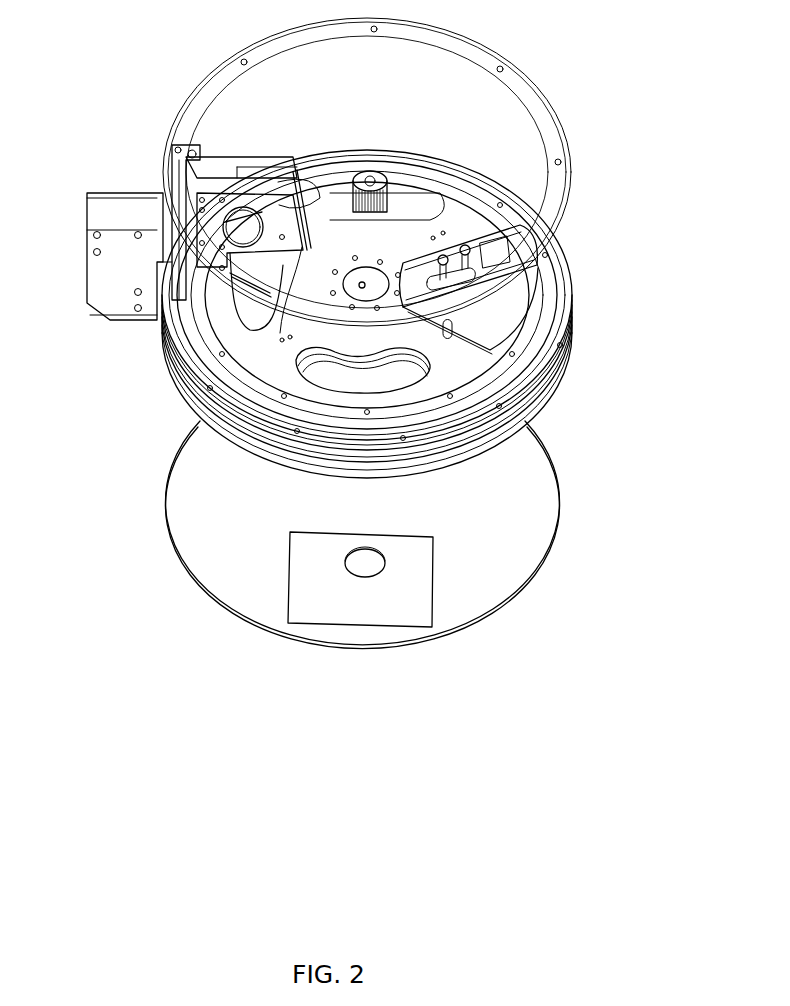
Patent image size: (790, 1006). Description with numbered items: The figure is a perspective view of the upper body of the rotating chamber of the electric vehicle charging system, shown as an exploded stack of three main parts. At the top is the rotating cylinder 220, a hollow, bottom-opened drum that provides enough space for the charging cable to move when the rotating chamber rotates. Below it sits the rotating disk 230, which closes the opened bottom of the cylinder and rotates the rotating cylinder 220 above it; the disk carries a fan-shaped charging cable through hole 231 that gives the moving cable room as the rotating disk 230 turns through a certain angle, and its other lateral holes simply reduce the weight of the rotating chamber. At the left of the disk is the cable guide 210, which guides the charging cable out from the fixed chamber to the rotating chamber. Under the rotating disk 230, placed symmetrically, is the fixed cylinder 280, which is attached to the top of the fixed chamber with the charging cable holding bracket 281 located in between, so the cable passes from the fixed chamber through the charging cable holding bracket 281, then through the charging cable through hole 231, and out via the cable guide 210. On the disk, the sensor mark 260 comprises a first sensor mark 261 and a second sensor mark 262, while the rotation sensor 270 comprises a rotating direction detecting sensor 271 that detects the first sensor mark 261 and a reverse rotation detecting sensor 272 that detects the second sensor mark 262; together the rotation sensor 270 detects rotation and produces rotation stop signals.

The cable guide 210 is at (214, 160).
The rotating cylinder 220 is at (522, 76).
The rotating disk 230 is at (562, 356).
The charging cable through hole 231 is at (507, 315).
The sensor mark 260 is at (376, 83).
The first sensor mark 261 is at (331, 188).
The second sensor mark 262 is at (433, 235).
The rotation sensor 270 is at (641, 186).
The rotating direction detecting sensor 271 is at (480, 253).
The reverse rotation detecting sensor 272 is at (507, 218).
The fixed cylinder 280 is at (549, 395).
The charging cable holding bracket 281 is at (427, 577).